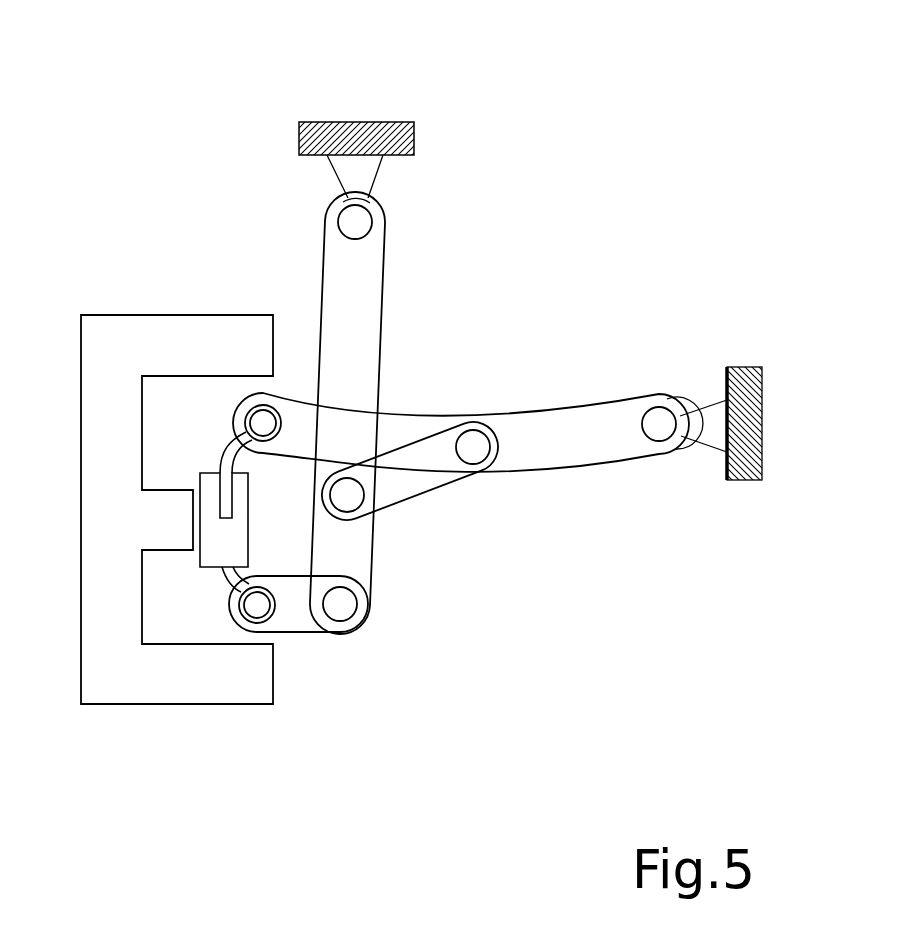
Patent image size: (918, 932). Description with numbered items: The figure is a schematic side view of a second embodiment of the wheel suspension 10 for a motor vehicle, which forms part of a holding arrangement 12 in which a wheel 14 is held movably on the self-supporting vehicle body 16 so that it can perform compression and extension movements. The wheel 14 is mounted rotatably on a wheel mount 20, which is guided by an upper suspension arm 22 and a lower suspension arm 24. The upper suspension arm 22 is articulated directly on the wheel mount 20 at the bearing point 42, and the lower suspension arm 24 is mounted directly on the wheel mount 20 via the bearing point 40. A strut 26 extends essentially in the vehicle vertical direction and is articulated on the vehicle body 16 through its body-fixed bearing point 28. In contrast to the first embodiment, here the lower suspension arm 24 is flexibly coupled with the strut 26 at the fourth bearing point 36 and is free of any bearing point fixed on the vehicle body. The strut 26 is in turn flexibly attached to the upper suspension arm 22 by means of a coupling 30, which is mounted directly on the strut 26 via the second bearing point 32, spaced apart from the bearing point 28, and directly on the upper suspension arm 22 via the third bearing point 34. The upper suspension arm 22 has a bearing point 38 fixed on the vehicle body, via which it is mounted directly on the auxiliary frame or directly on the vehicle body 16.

The wheel suspension 10 is at (137, 157).
The holding arrangement 12 is at (92, 726).
The wheel 14 is at (142, 685).
The vehicle body 16 is at (358, 135).
The wheel mount 20 is at (212, 501).
The upper suspension arm 22 is at (608, 440).
The lower suspension arm 24 is at (293, 613).
The strut 26 is at (357, 308).
The bearing point 28 is at (385, 201).
The coupling 30 is at (438, 477).
The second bearing point 32 is at (311, 520).
The third bearing point 34 is at (484, 499).
The fourth bearing point 36 is at (377, 616).
The bearing point 38 is at (665, 388).
The bearing point 40 is at (244, 646).
The bearing point 42 is at (277, 386).